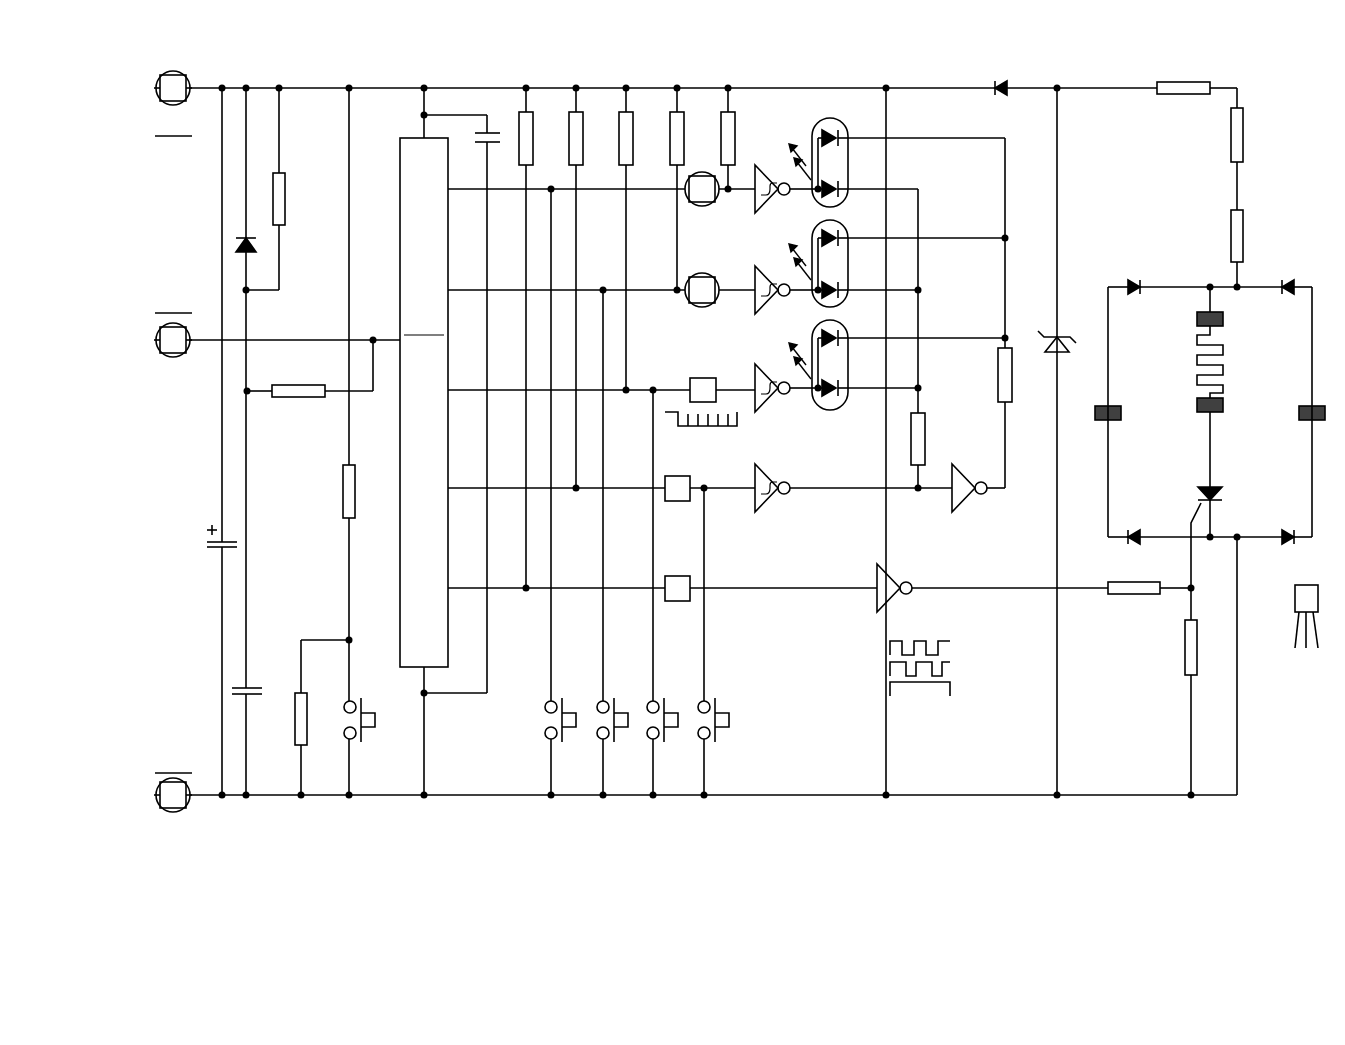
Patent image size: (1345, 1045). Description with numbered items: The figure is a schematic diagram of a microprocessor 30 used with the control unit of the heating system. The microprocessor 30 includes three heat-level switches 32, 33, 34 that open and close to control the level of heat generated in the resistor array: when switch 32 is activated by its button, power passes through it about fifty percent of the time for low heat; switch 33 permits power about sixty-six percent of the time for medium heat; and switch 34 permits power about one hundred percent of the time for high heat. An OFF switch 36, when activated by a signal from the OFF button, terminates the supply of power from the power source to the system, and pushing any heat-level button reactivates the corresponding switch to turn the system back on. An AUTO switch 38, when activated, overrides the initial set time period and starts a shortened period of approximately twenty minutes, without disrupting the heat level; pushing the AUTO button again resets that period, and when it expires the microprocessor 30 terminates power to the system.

The microprocessor 30 is at (743, 452).
The switch 32 is at (561, 690).
The switch 33 is at (613, 690).
The switch 34 is at (663, 690).
The OFF switch 36 is at (359, 690).
The AUTO switch 38 is at (713, 690).